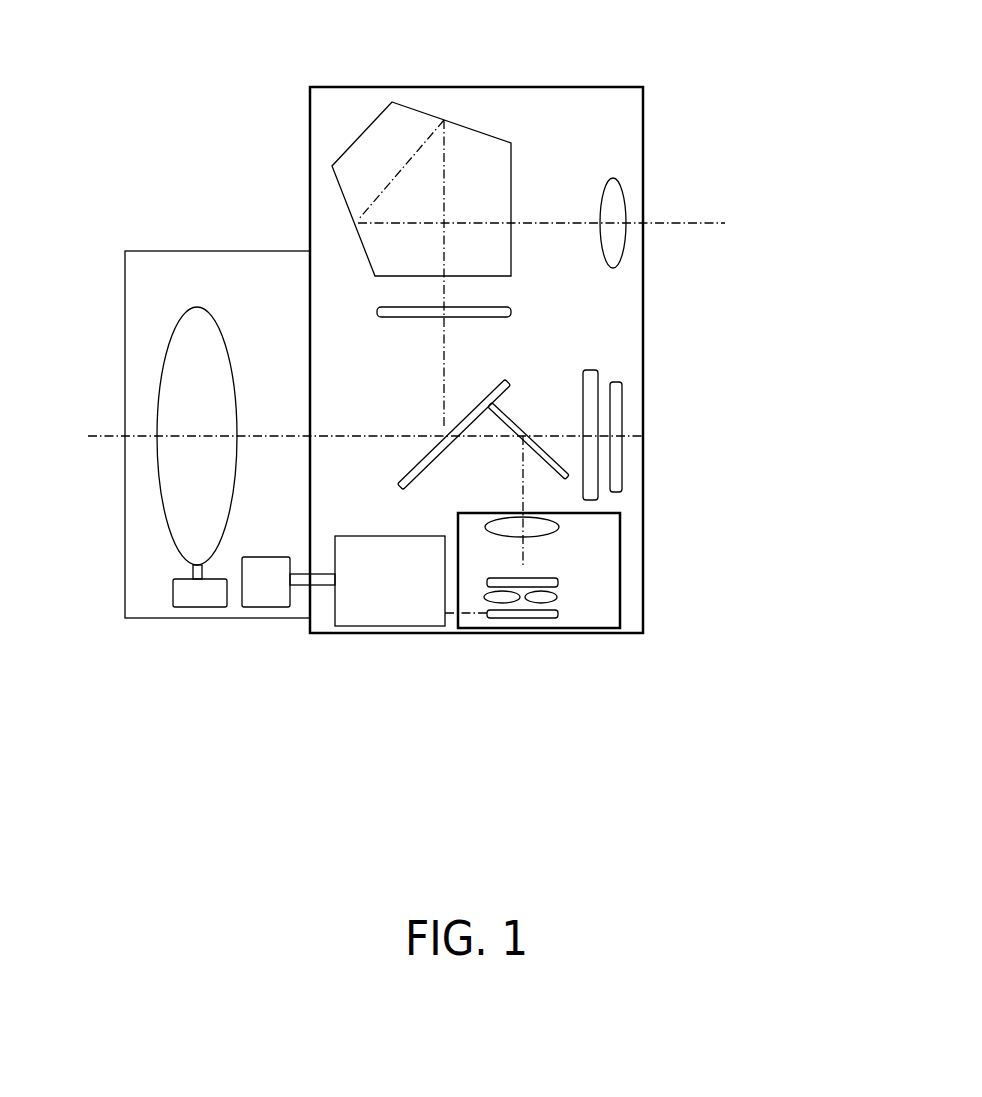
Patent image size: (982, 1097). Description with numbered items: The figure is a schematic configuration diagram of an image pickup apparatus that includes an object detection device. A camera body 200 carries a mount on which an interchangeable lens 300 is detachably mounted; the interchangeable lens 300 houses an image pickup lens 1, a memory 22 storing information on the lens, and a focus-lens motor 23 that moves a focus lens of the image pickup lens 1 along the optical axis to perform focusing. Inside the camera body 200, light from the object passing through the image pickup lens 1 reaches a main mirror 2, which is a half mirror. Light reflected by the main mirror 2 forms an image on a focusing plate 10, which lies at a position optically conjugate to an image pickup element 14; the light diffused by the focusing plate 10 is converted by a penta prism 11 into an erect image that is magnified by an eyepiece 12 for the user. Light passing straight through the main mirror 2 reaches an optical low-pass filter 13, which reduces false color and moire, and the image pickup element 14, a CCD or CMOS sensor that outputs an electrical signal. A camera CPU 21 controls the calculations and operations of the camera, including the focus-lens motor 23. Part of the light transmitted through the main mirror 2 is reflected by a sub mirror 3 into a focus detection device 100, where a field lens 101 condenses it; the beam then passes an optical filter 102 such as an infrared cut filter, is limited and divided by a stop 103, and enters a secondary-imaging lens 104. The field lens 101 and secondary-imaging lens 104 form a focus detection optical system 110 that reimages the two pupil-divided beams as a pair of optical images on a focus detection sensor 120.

The image pickup lens 1 is at (167, 520).
The main mirror 2 is at (425, 457).
The sub mirror 3 is at (510, 413).
The focusing plate 10 is at (392, 305).
The penta prism 11 is at (382, 132).
The eyepiece 12 is at (608, 186).
The optical low-pass filter 13 is at (598, 377).
The image pickup element 14 is at (622, 455).
The camera CPU 21 is at (388, 626).
The memory 22 is at (265, 607).
The focus-lens motor 23 is at (173, 607).
The focus detection device 100 is at (455, 627).
The field lens 101 is at (558, 522).
The optical filter 102 is at (558, 582).
The stop 103 is at (567, 592).
The secondary-imaging lens 104 is at (522, 663).
The focus detection optical system 110 is at (672, 619).
The focus detection sensor 120 is at (548, 601).
The camera body 200 is at (520, 98).
The interchangeable lens 300 is at (150, 278).